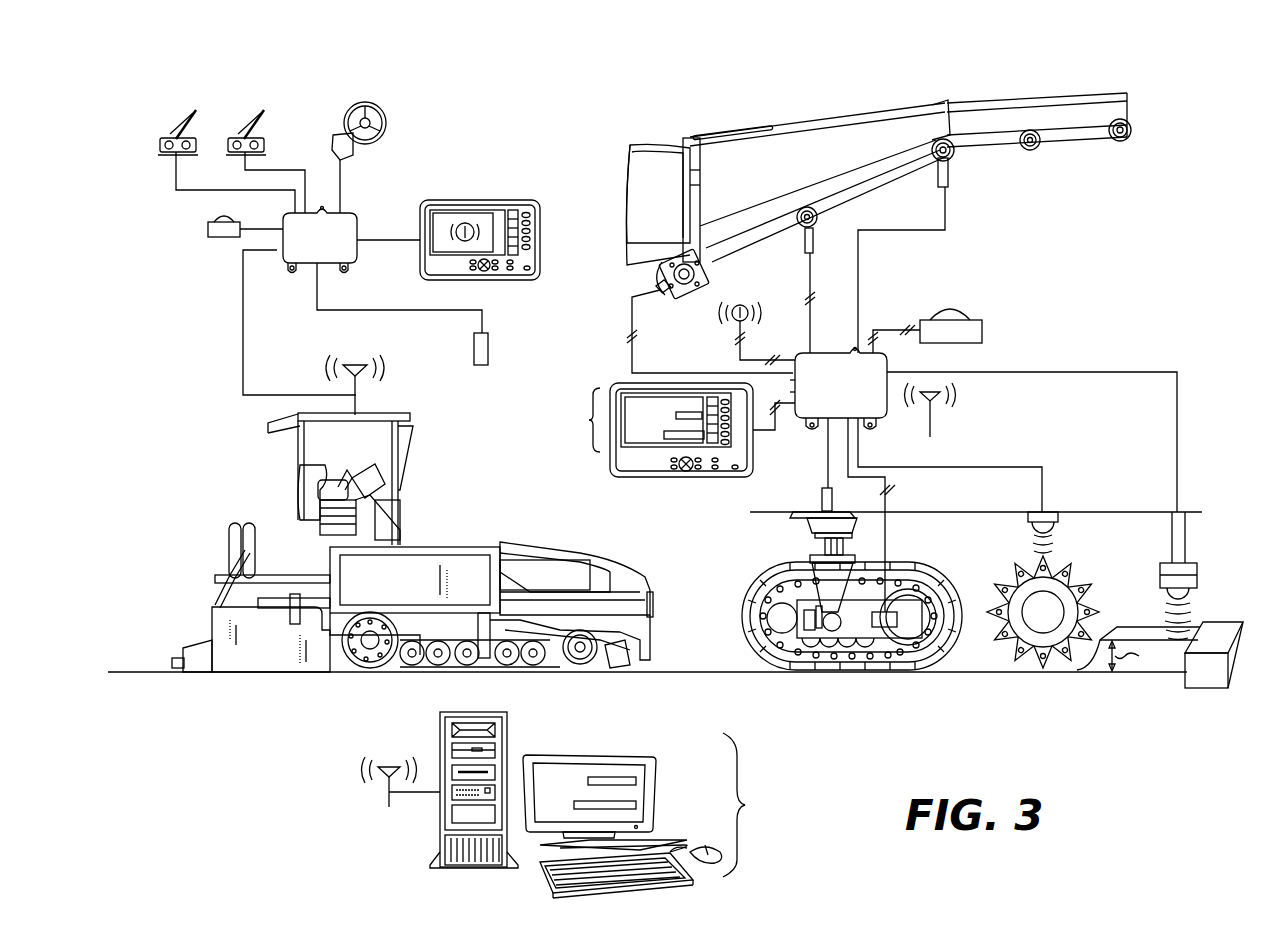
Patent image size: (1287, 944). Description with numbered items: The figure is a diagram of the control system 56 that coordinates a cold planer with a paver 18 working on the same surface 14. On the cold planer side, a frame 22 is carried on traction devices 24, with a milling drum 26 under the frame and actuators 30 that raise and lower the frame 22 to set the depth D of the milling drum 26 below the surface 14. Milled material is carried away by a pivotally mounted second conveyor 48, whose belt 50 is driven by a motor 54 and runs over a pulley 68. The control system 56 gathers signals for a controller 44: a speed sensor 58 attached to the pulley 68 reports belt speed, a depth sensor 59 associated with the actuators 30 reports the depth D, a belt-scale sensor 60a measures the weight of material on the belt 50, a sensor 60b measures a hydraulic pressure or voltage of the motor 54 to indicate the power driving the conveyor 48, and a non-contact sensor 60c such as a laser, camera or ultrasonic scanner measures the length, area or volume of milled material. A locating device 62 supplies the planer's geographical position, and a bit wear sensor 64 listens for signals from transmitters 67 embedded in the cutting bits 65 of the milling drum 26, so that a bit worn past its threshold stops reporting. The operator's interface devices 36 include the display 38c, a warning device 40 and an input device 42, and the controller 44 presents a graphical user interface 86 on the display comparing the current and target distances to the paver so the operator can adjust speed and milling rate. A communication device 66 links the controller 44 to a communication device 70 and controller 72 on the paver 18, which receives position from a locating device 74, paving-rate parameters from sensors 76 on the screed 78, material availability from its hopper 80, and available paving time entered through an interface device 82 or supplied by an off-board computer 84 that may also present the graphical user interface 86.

The surface 14 is at (1222, 625).
The paver 18 is at (472, 483).
The frame 22 is at (664, 210).
The traction devices 24 is at (745, 602).
The milling drum 26 is at (1052, 622).
The actuators 30 is at (828, 583).
The interface devices 36 is at (650, 477).
The display 38c is at (590, 412).
The warning device 40 is at (730, 330).
The input device 42 is at (737, 500).
The controller 44 is at (847, 393).
The second conveyor 48 is at (1170, 113).
The belt 50 is at (1090, 145).
The motor 54 is at (682, 300).
The control system 56 is at (1120, 272).
The speed sensor 58 is at (953, 185).
The depth sensor 59 is at (835, 496).
The material measurement sensor 60a is at (806, 253).
The material measurement sensor 60b is at (658, 288).
The material measurement sensor 60c is at (1160, 583).
The locating device 62 is at (983, 331).
The bit wear sensor 64 is at (1050, 512).
The cutting bits 65 is at (1043, 633).
The communication device 66 is at (945, 415).
The transmitters 67 is at (1037, 567).
The pulley 68 is at (955, 156).
The communication device 70 is at (357, 387).
The controller 72 is at (329, 254).
The locating device 74 is at (208, 231).
The sensors 76 is at (490, 346).
The screed 78 is at (198, 588).
The hopper 80 is at (559, 581).
The interface device 82 is at (522, 200).
The off-board computer 84 is at (507, 742).
The graphical user interface 86 is at (658, 437).
The depth D is at (1132, 656).